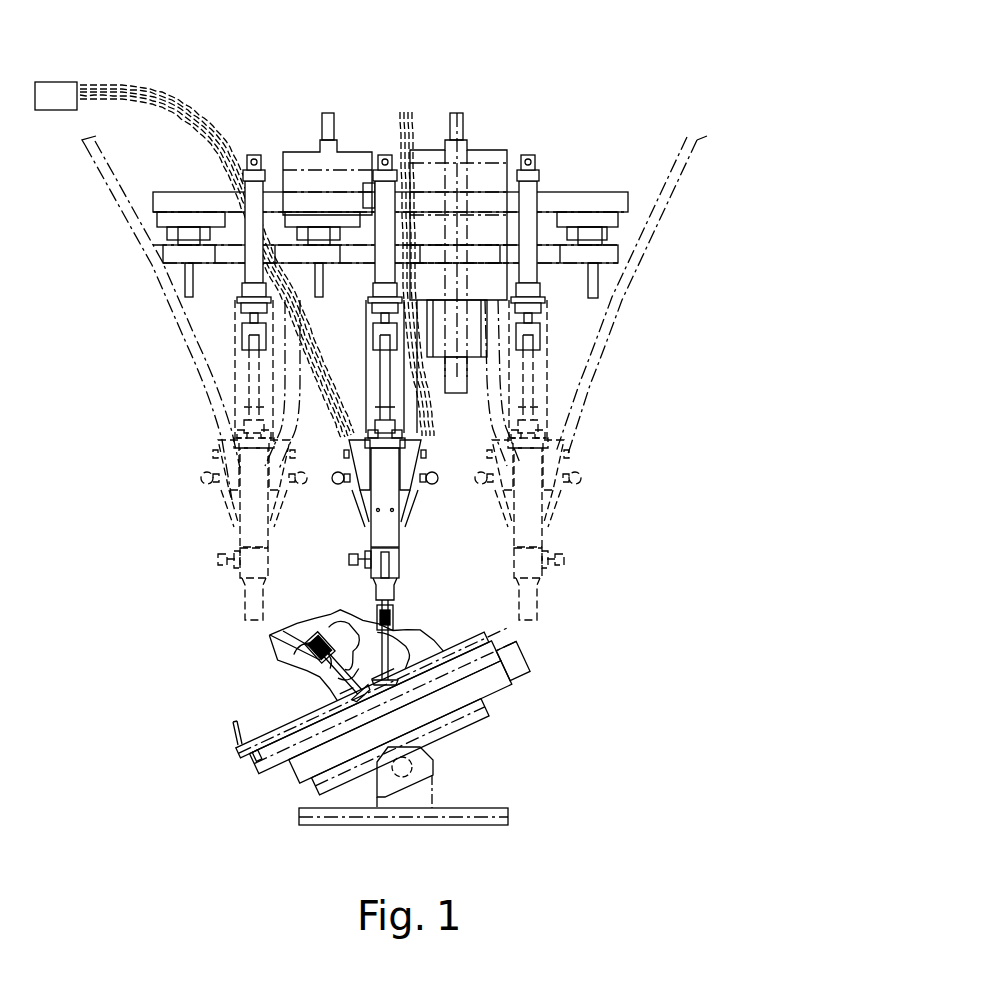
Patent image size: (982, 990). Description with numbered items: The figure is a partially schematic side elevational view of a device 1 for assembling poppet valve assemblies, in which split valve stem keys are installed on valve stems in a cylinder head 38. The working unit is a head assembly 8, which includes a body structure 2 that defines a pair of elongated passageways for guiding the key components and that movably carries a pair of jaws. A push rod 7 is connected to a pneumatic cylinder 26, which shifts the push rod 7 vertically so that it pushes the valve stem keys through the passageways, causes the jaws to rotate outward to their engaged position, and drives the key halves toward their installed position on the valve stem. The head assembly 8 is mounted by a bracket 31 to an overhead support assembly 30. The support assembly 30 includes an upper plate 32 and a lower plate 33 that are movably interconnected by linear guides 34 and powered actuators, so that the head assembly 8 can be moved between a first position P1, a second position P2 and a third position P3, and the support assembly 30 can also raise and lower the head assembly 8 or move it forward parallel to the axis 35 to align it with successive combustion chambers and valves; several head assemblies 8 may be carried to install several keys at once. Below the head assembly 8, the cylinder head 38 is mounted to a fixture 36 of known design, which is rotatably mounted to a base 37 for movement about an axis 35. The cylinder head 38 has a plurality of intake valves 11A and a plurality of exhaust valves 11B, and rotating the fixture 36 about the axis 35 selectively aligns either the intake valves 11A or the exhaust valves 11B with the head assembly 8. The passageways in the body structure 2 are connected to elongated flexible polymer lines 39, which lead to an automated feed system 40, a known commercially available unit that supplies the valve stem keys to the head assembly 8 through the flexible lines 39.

The device 1 is at (625, 428).
The body structure 2 is at (394, 478).
The push rod 7 is at (364, 374).
The head assembly 8 is at (400, 548).
The intake valves 11A is at (290, 633).
The exhaust valves 11B is at (476, 582).
The pneumatic cylinder 26 is at (373, 240).
The support assembly 30 is at (590, 192).
The bracket 31 is at (362, 310).
The upper plate 32 is at (565, 192).
The lower plate 33 is at (553, 263).
The linear guides 34 is at (317, 228).
The axis 35 is at (440, 770).
The fixture 36 is at (512, 675).
The base 37 is at (508, 824).
The cylinder head 38 is at (317, 673).
The flexible lines 39 is at (227, 180).
The automated feed system 40 is at (56, 96).
The first position P1 is at (237, 500).
The second position P2 is at (393, 478).
The third position P3 is at (540, 522).